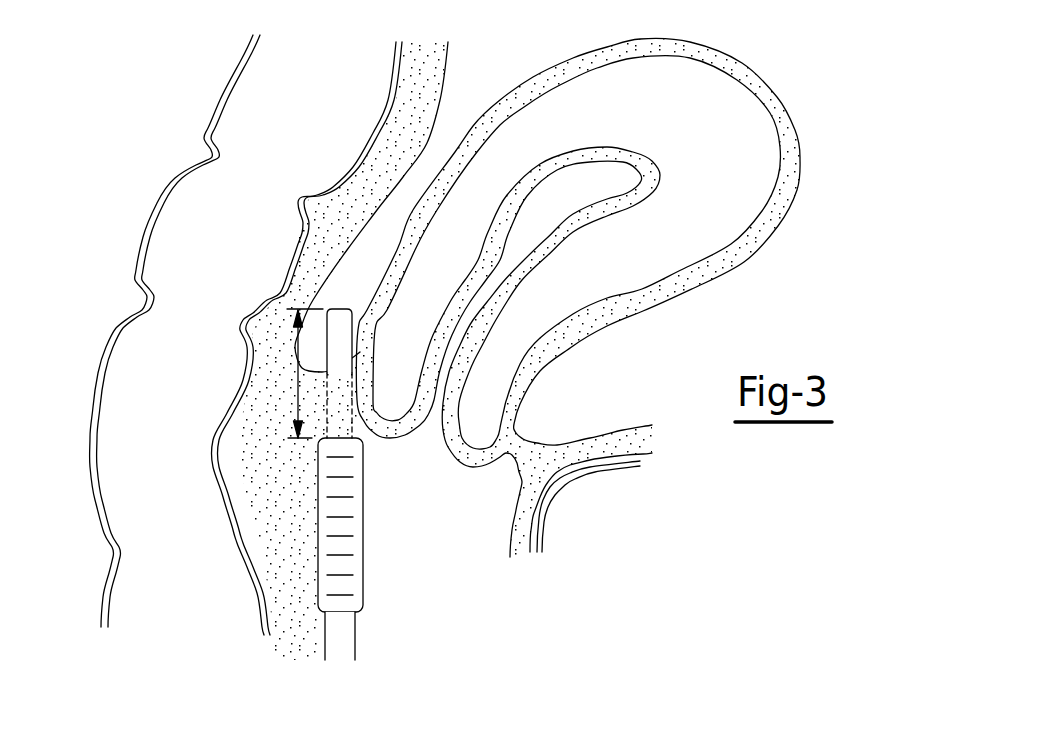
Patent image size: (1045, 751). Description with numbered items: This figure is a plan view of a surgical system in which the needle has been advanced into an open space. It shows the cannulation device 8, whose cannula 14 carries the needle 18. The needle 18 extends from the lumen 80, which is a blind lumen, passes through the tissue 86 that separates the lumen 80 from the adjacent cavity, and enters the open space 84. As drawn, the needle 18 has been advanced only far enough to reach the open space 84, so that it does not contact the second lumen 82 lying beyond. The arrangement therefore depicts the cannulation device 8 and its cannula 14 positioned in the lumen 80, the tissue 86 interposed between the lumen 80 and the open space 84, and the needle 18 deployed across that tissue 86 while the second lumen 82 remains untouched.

The cannulation device 8 is at (470, 529).
The cannula 14 is at (340, 553).
The needle 18 is at (338, 337).
The lumen 80 is at (468, 565).
The second lumen 82 is at (189, 617).
The open space 84 is at (340, 283).
The tissue 86 is at (322, 403).